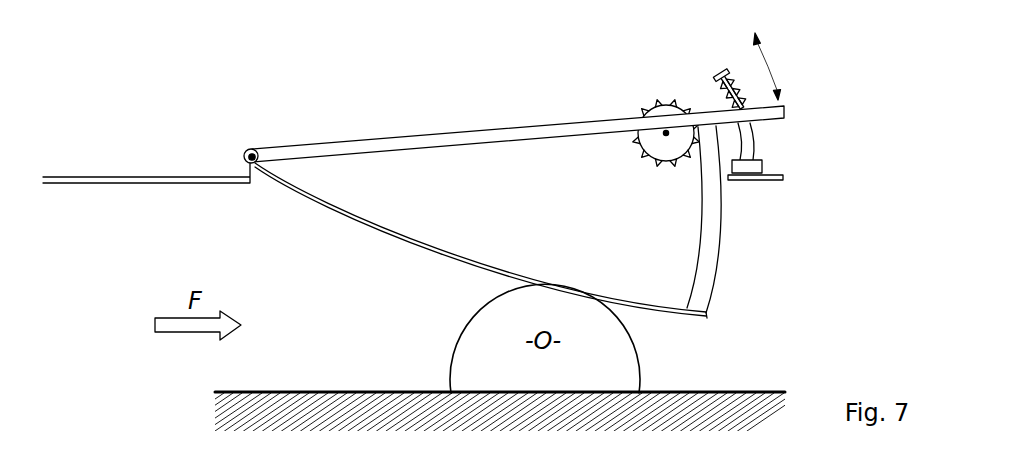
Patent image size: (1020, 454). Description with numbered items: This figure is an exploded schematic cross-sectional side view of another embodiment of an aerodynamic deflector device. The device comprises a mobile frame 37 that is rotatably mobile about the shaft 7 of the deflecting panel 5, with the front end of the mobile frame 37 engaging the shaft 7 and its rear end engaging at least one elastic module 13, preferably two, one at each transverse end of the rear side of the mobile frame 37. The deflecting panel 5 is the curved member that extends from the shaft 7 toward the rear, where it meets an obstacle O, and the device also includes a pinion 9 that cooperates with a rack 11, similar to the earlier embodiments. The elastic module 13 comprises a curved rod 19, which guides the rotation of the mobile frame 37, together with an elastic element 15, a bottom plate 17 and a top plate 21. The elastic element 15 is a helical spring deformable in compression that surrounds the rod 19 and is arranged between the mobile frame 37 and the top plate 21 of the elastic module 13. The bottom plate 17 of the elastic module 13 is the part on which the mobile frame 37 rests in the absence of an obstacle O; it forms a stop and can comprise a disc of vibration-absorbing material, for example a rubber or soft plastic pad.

The deflecting panel 5 is at (455, 258).
The shaft 7 is at (250, 149).
The pinion 9 is at (650, 110).
The rack 11 is at (716, 276).
The elastic module 13 is at (837, 109).
The elastic element 15 is at (744, 88).
The bottom plate 17 is at (762, 170).
The rod 19 is at (753, 147).
The top plate 21 is at (728, 70).
The mobile frame 37 is at (390, 137).